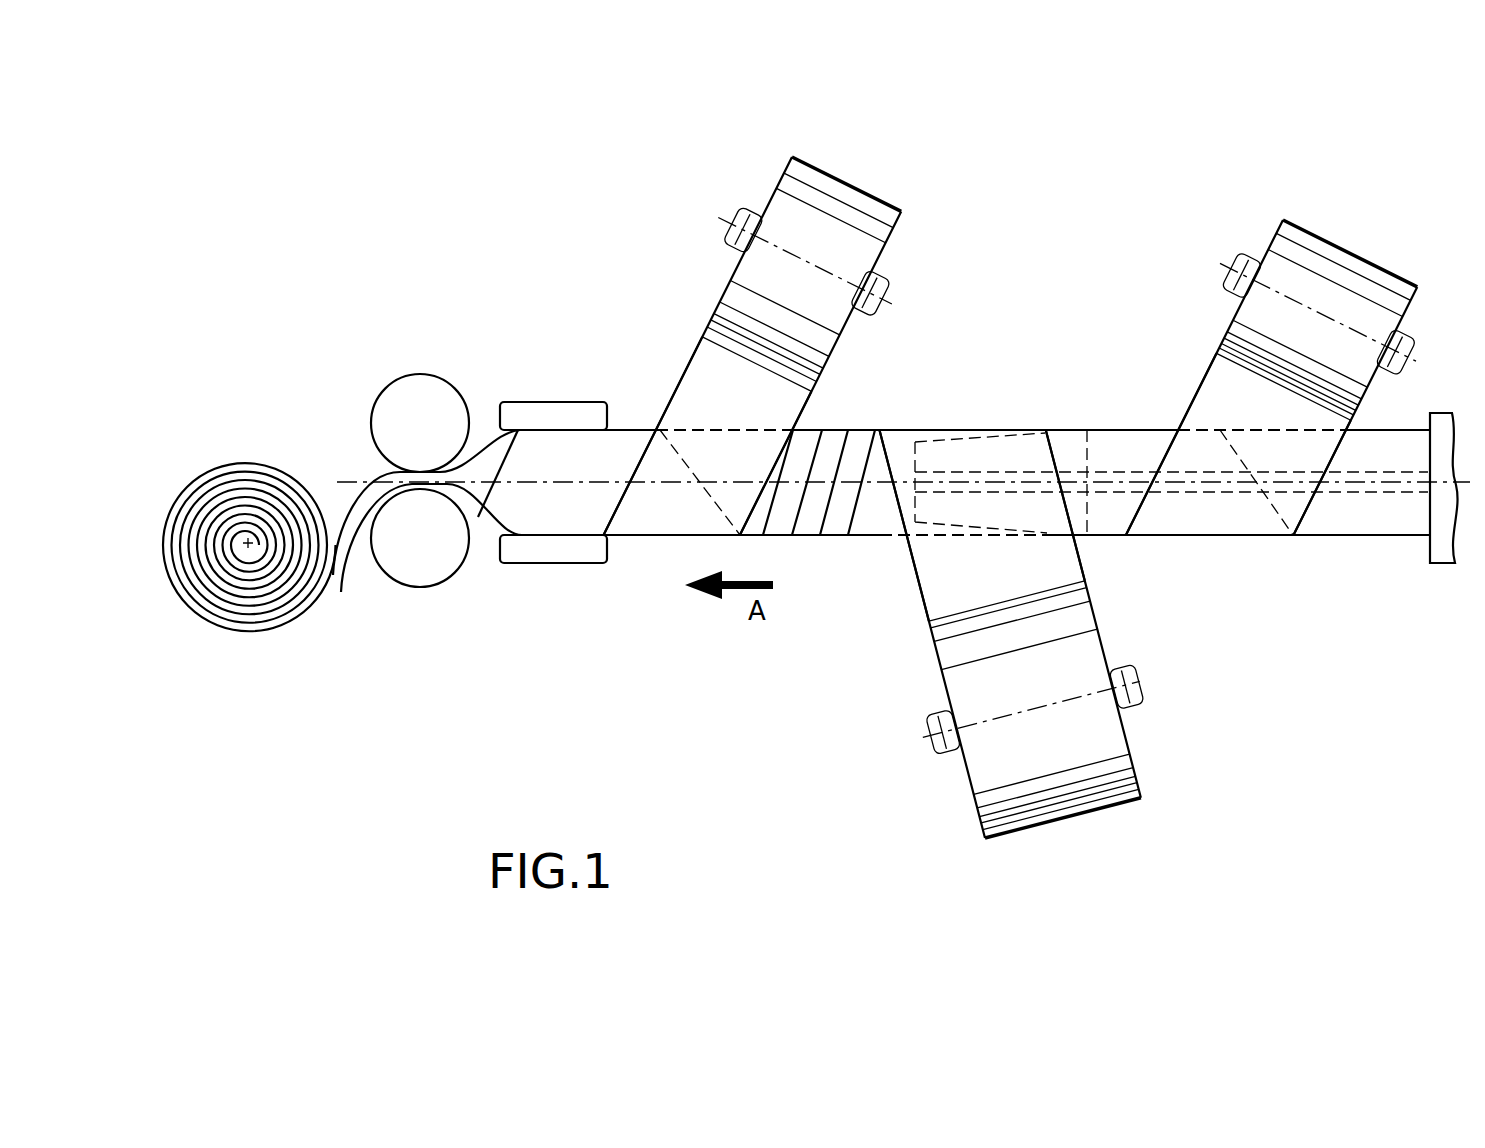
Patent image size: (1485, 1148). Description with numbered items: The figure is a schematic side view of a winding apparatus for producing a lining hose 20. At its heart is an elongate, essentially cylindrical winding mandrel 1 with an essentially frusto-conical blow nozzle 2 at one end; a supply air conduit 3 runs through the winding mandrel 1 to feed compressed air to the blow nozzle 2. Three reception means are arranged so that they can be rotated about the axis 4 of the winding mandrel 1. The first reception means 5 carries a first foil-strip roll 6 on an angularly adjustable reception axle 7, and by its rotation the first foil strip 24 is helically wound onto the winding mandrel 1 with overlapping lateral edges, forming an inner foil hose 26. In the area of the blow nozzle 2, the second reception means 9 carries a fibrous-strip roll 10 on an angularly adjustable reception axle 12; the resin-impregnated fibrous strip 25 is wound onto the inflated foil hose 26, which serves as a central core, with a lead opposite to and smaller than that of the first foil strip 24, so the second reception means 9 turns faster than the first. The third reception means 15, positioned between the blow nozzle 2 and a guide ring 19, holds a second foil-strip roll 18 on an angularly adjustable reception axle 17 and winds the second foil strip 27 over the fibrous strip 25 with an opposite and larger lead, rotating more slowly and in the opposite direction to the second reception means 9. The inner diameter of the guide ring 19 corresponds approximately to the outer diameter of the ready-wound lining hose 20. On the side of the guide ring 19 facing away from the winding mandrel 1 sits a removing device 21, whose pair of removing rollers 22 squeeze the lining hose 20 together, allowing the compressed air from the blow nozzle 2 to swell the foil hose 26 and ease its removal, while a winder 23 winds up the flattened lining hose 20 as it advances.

The winding mandrel 1 is at (1370, 505).
The blow nozzle 2 is at (950, 438).
The supply air conduit 3 is at (1407, 490).
The axis 4 is at (1237, 485).
The first reception means 5 is at (1255, 228).
The first foil-strip roll 6 is at (1357, 278).
The reception axle 7 is at (1228, 283).
The second reception means 9 is at (935, 765).
The fibrous-strip roll 10 is at (1090, 760).
The reception axle 12 is at (1128, 662).
The third reception means 15 is at (763, 193).
The reception axle 17 is at (885, 295).
The second foil-strip roll 18 is at (883, 237).
The guide ring 19 is at (549, 565).
The lining hose 20 is at (573, 450).
The removing device 21 is at (358, 573).
The removing rollers 22 is at (421, 420).
The winder 23 is at (255, 530).
The first foil strip 24 is at (1237, 395).
The fibrous strip 25 is at (970, 578).
The foil hose 26 is at (1105, 455).
The second foil strip 27 is at (716, 388).